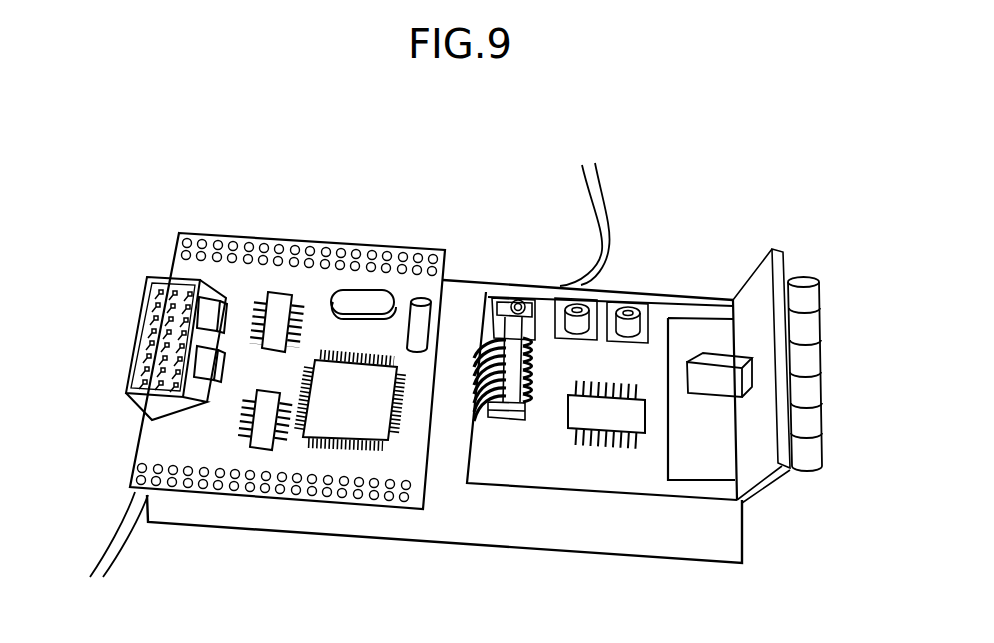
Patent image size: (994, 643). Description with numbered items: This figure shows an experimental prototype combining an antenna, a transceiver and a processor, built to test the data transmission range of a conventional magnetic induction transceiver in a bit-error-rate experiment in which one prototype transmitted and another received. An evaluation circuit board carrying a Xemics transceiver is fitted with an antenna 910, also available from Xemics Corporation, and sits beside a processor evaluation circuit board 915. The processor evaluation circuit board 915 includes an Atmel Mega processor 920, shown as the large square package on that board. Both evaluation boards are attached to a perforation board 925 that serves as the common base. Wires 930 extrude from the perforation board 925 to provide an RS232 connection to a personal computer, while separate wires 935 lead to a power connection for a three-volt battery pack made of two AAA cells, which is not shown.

The antenna 910 is at (808, 357).
The processor evaluation circuit board 915 is at (282, 298).
The processor 920 is at (378, 383).
The perforation board 925 is at (560, 530).
The wires 930 is at (600, 207).
The wires 935 is at (128, 487).